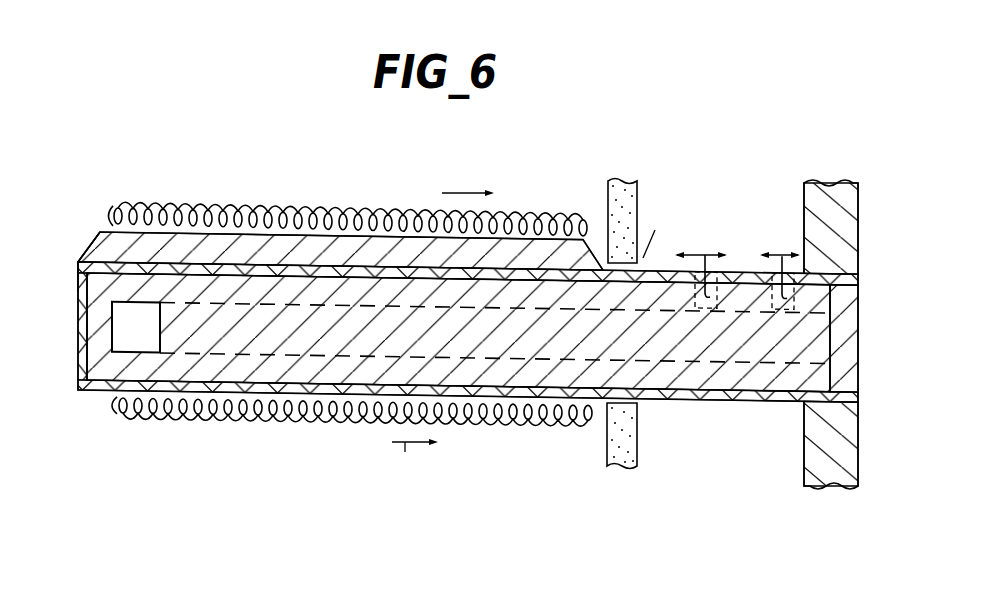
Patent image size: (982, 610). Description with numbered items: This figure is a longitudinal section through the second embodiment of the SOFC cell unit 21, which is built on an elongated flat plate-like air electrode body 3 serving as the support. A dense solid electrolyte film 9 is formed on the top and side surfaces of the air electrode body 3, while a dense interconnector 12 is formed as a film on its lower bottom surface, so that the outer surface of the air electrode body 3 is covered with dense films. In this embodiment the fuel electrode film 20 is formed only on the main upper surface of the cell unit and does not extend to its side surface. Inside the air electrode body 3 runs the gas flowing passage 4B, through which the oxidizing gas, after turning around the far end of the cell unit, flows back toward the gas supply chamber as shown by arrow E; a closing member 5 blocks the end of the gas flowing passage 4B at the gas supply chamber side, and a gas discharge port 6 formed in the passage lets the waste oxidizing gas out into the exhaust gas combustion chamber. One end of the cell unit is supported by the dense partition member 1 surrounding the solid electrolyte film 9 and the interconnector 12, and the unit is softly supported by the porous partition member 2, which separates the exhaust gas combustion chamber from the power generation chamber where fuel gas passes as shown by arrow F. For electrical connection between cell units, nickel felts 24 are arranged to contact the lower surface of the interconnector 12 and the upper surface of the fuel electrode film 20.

The dense partition member 1 is at (826, 190).
The porous partition member 2 is at (622, 178).
The air electrode body 3 is at (523, 292).
The gas flowing passage 4B is at (399, 298).
The closing member 5 is at (851, 339).
The gas discharge port 6 is at (779, 296).
The dense solid electrolyte film 9 is at (158, 268).
The interconnector 12 is at (503, 399).
The fuel electrode film 20 is at (115, 245).
The SOFC cell unit 21 is at (73, 268).
The nickel felt 24 is at (199, 211).
The arrow E is at (692, 255).
The arrow F is at (458, 193).